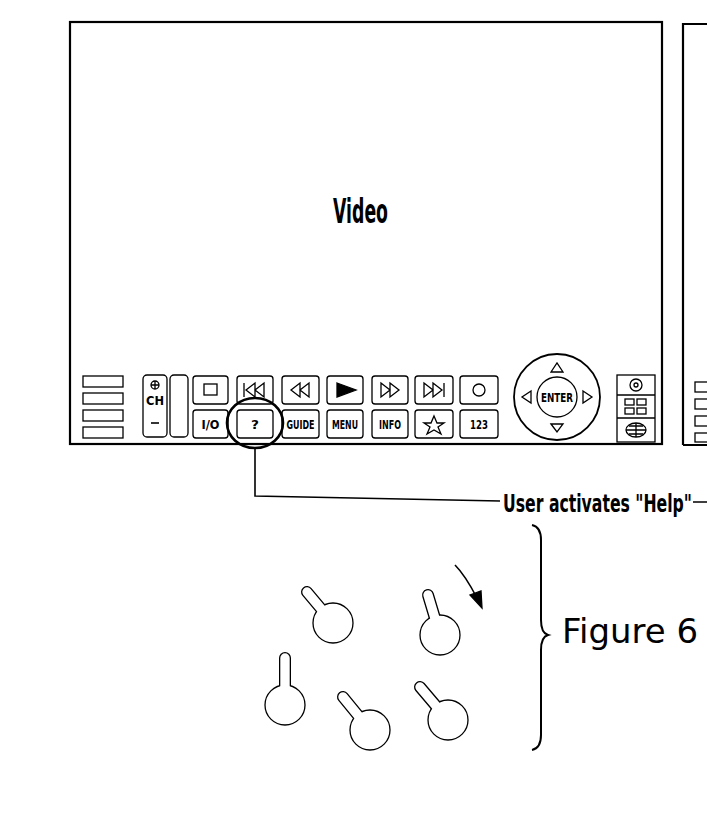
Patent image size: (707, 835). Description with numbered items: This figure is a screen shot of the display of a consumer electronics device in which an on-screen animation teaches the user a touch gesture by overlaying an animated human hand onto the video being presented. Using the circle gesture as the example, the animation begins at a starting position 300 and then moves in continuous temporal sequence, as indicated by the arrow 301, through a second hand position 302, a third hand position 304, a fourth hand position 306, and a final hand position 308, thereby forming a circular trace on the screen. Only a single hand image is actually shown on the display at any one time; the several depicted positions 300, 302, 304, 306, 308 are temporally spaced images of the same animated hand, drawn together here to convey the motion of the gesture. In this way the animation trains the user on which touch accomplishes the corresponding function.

The animation starting position 300 is at (320, 594).
The arrow 301 is at (467, 568).
The second hand position 302 is at (423, 617).
The third hand position 304 is at (464, 700).
The fourth hand position 306 is at (358, 706).
The final hand position 308 is at (276, 667).